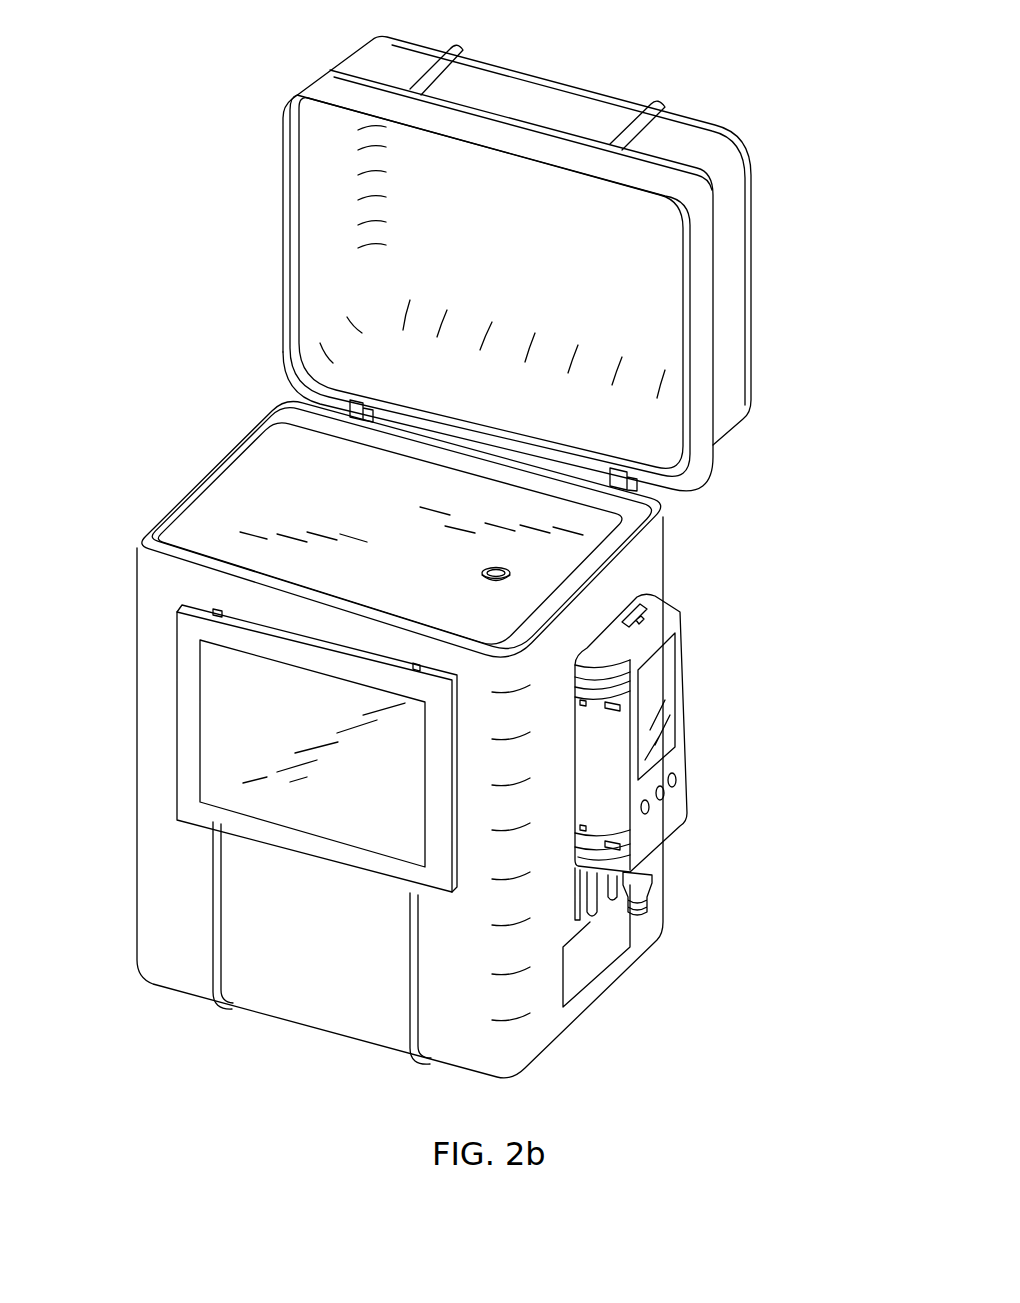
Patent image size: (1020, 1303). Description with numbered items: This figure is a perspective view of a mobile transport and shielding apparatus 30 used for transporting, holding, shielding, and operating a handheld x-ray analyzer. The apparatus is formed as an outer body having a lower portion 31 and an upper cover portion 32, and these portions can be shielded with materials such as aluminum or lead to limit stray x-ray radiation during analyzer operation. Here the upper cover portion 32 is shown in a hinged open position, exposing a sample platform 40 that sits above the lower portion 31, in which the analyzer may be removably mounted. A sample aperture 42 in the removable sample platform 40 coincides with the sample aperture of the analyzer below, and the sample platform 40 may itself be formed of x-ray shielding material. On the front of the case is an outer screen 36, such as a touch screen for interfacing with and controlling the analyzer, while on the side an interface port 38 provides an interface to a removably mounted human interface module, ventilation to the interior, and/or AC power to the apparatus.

The mobile transport and shielding apparatus 30 is at (697, 1021).
The lower portion 31 is at (320, 998).
The upper cover portion 32 is at (442, 187).
The outer screen 36 is at (220, 717).
The interface port 38 is at (602, 953).
The sample platform 40 is at (262, 477).
The sample aperture 42 is at (517, 572).